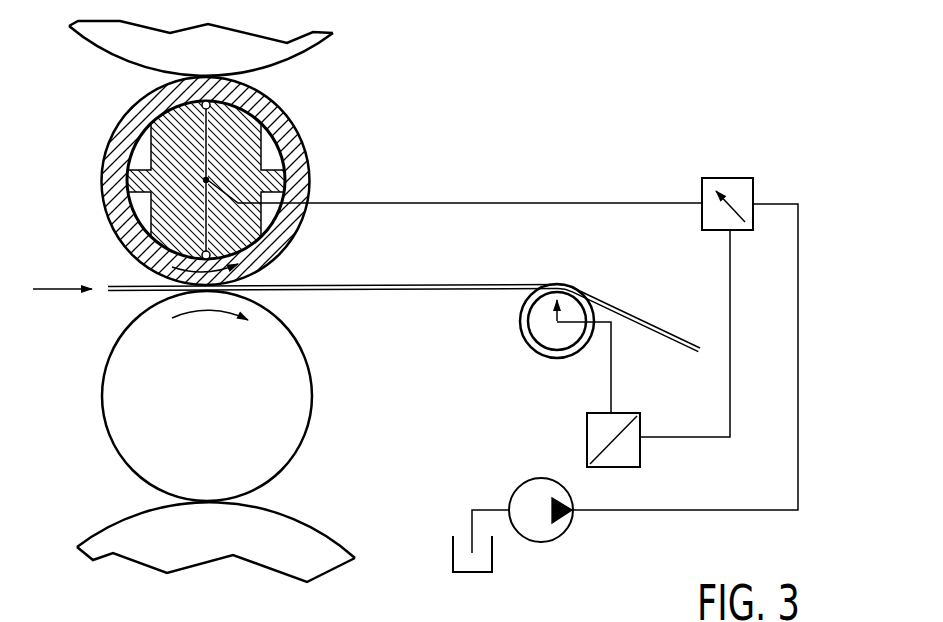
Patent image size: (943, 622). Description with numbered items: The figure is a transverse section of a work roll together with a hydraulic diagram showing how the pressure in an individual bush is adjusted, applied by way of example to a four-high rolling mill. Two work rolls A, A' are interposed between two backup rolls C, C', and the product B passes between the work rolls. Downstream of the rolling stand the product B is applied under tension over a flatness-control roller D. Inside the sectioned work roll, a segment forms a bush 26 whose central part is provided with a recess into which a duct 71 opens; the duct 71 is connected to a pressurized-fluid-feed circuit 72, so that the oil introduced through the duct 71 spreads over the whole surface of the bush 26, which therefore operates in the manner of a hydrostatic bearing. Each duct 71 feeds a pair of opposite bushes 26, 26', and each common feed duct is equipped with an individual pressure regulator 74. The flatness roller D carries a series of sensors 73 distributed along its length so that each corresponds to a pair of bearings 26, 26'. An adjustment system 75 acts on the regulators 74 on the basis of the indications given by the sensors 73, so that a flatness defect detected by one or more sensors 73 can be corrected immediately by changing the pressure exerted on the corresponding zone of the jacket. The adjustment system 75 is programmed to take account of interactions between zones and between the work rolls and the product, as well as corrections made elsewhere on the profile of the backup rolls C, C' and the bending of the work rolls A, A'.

The bush 26 is at (186, 168).
The opposite bush 26' is at (177, 180).
The duct 71 is at (203, 153).
The pressurized-fluid-feed circuit 72 is at (467, 203).
The sensor 73 is at (554, 315).
The pressure regulator 74 is at (713, 178).
The adjustment system 75 is at (627, 413).
The work roll A is at (211, 181).
The work roll A' is at (233, 396).
The product B is at (322, 286).
The backup roll C is at (212, 57).
The backup roll C' is at (219, 526).
The flatness-control roller D is at (520, 311).